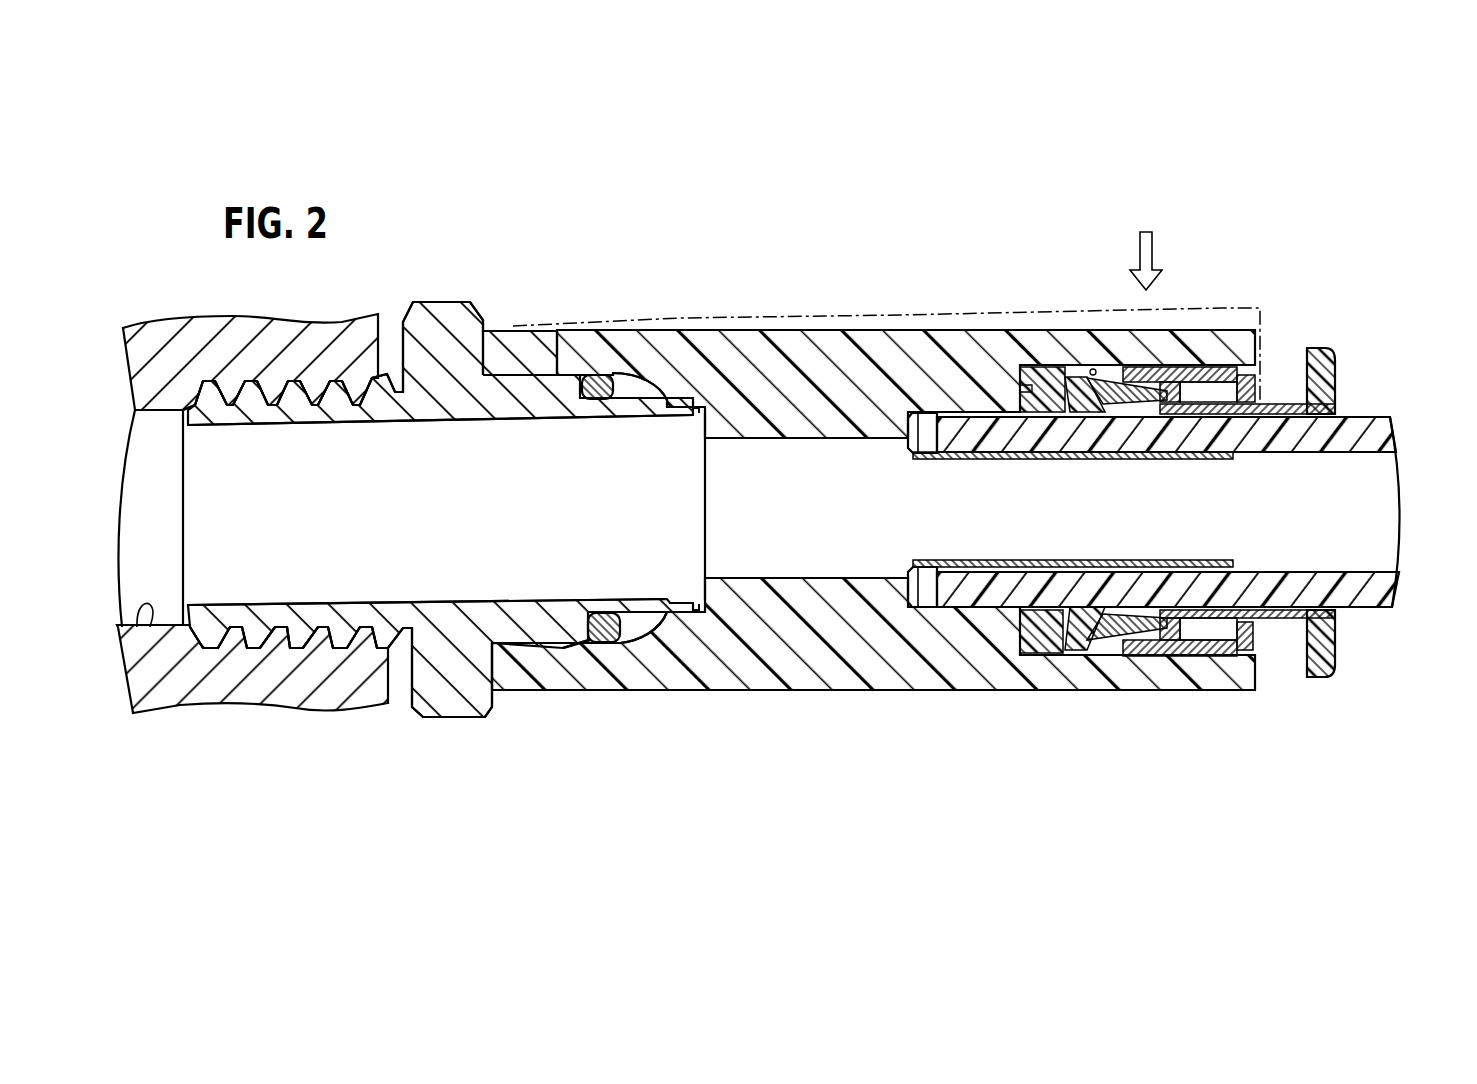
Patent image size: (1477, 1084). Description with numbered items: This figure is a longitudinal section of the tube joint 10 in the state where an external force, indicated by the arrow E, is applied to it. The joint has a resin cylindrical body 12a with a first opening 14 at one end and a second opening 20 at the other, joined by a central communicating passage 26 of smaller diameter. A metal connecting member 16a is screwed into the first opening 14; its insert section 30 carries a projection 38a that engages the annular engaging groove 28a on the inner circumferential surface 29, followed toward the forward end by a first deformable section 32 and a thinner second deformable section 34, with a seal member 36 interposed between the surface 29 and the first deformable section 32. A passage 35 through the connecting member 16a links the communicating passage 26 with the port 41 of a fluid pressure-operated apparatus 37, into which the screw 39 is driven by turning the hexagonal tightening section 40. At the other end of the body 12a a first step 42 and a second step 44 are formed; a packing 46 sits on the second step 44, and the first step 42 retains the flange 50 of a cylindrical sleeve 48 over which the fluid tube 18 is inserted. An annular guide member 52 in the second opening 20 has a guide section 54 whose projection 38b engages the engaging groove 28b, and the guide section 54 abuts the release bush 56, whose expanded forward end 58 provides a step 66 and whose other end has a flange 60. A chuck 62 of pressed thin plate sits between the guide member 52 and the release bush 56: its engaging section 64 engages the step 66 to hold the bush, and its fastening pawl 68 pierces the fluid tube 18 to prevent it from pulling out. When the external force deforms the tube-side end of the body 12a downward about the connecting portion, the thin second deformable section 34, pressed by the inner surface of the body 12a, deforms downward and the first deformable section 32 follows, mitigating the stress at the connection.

The tube joint 10 is at (1362, 254).
The body 12a is at (772, 326).
The first opening 14 is at (527, 375).
The connecting member 16a is at (412, 708).
The fluid tube 18 is at (1384, 431).
The second opening 20 is at (1245, 378).
The communicating passage 26 is at (722, 496).
The engaging groove 28a is at (563, 375).
The engaging groove 28b is at (1195, 372).
The inner circumferential surface 29 is at (660, 630).
The insert section 30 is at (516, 614).
The first deformable section 32 is at (595, 675).
The second deformable section 34 is at (697, 597).
The passage 35 is at (360, 430).
The seal member 36 is at (611, 624).
The fluid pressure-operated apparatus 37 is at (220, 708).
The projection 38a is at (537, 687).
The projection 38b is at (1197, 660).
The screw 39 is at (290, 650).
The tightening section 40 is at (455, 315).
The port 41 is at (150, 620).
The first step 42 is at (947, 413).
The second step 44 is at (1090, 370).
The packing 46 is at (1030, 375).
The sleeve 48 is at (1020, 459).
The flange 50 is at (906, 450).
The guide member 52 is at (1242, 656).
The guide section 54 is at (1253, 633).
The release bush 56 is at (1340, 655).
The forward end 58 is at (1130, 614).
The flange 60 is at (1327, 363).
The chuck 62 is at (1046, 656).
The engaging section 64 is at (1174, 412).
The step 66 is at (1138, 410).
The fastening pawl 68 is at (1078, 414).